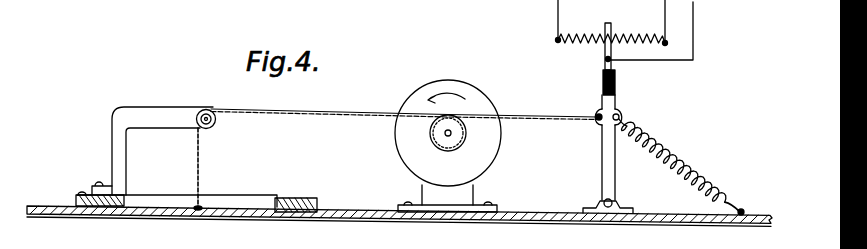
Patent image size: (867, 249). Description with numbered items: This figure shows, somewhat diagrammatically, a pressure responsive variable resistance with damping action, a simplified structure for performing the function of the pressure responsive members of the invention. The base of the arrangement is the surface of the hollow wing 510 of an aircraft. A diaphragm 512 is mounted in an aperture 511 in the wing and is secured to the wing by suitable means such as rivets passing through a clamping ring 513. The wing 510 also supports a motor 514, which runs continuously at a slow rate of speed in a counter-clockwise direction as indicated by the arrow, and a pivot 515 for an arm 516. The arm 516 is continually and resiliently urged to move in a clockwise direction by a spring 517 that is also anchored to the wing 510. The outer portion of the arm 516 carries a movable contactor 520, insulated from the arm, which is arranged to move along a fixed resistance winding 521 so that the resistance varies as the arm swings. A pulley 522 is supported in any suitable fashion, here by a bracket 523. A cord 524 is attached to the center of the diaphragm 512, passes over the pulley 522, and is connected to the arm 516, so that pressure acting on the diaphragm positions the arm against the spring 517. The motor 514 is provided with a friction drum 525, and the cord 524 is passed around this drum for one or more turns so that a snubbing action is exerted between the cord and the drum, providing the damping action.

The wing surface 510 is at (386, 223).
The aperture 511 is at (142, 218).
The diaphragm 512 is at (166, 214).
The clamping ring 513 is at (77, 198).
The motor 514 is at (480, 165).
The pivot 515 is at (598, 208).
The arm 516 is at (613, 178).
The spring 517 is at (682, 160).
The movable contactor 520 is at (604, 50).
The resistance winding 521 is at (623, 30).
The pulley 522 is at (206, 108).
The bracket 523 is at (134, 115).
The cord 524 is at (204, 154).
The friction drum 525 is at (455, 128).